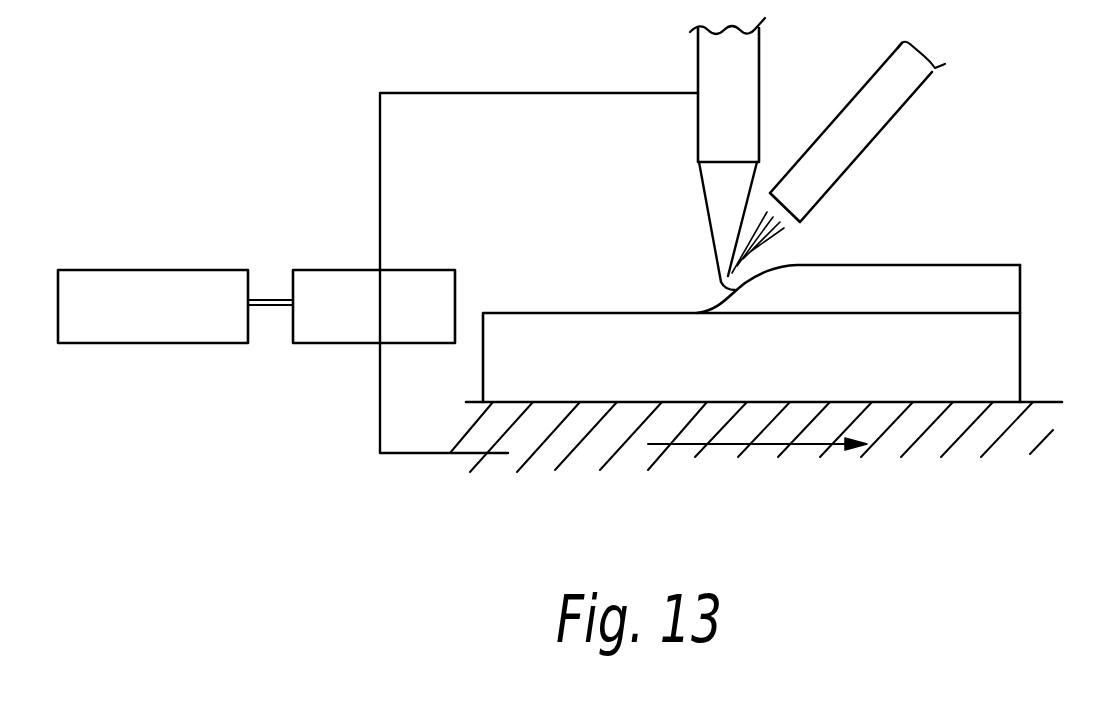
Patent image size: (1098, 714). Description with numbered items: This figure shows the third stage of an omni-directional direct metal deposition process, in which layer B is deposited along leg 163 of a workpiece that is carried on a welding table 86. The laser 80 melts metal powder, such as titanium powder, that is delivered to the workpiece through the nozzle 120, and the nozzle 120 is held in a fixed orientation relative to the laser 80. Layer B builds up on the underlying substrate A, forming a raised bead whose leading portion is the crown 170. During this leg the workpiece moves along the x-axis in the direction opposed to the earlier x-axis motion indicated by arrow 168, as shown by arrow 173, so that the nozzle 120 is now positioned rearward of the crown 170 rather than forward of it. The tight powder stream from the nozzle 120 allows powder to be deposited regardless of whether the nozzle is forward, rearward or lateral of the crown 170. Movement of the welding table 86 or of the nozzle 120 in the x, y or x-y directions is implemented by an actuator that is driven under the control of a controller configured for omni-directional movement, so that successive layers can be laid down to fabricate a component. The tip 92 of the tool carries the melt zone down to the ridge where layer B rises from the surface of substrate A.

The crown 170 is at (210, 268).
The arrow 168 is at (405, 266).
The laser 80 is at (748, 78).
The tool tip 92 is at (722, 183).
The nozzle 120 is at (890, 118).
The leg 163 is at (858, 263).
The layer B is at (1010, 296).
The substrate A is at (1020, 355).
The welding table 86 is at (983, 433).
The arrow 173 is at (800, 447).